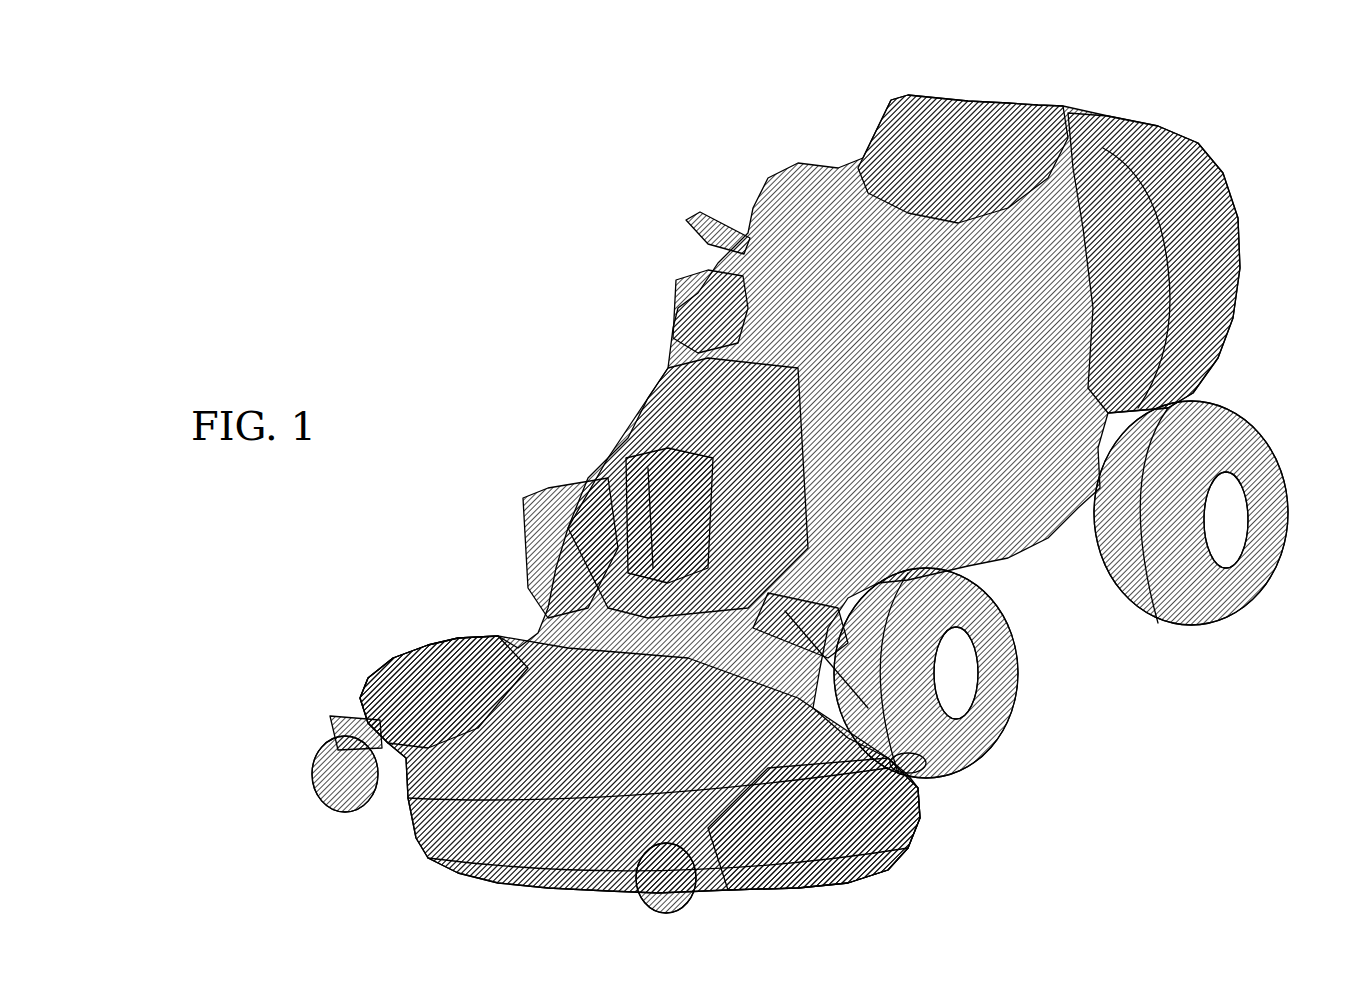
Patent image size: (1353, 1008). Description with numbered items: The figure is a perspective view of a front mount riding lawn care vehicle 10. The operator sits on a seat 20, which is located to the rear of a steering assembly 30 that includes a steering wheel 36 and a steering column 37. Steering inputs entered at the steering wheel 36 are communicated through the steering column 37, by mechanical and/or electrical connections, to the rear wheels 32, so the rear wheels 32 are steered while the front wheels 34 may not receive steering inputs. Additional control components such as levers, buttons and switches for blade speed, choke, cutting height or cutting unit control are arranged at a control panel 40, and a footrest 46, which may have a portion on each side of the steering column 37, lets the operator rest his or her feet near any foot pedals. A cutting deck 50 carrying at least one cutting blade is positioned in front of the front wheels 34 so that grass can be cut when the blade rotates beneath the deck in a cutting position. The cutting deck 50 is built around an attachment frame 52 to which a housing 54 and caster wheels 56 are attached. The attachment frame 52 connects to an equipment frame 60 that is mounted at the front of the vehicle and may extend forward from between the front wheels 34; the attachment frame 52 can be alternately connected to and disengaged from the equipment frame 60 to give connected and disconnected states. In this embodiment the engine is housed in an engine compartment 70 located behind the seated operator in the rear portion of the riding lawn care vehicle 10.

The riding lawn care vehicle 10 is at (707, 470).
The seat 20 is at (860, 150).
The steering assembly 30 is at (617, 440).
The rear wheels 32 is at (1170, 600).
The front wheels 34 is at (967, 713).
The steering wheel 36 is at (692, 218).
The steering column 37 is at (643, 493).
The control panel 40 is at (688, 290).
The footrest 46 is at (903, 763).
The cutting deck 50 is at (527, 779).
The attachment frame 52 is at (380, 720).
The housing 54 is at (833, 837).
The caster wheels 56 is at (315, 775).
The equipment frame 60 is at (777, 603).
The engine compartment 70 is at (1133, 162).